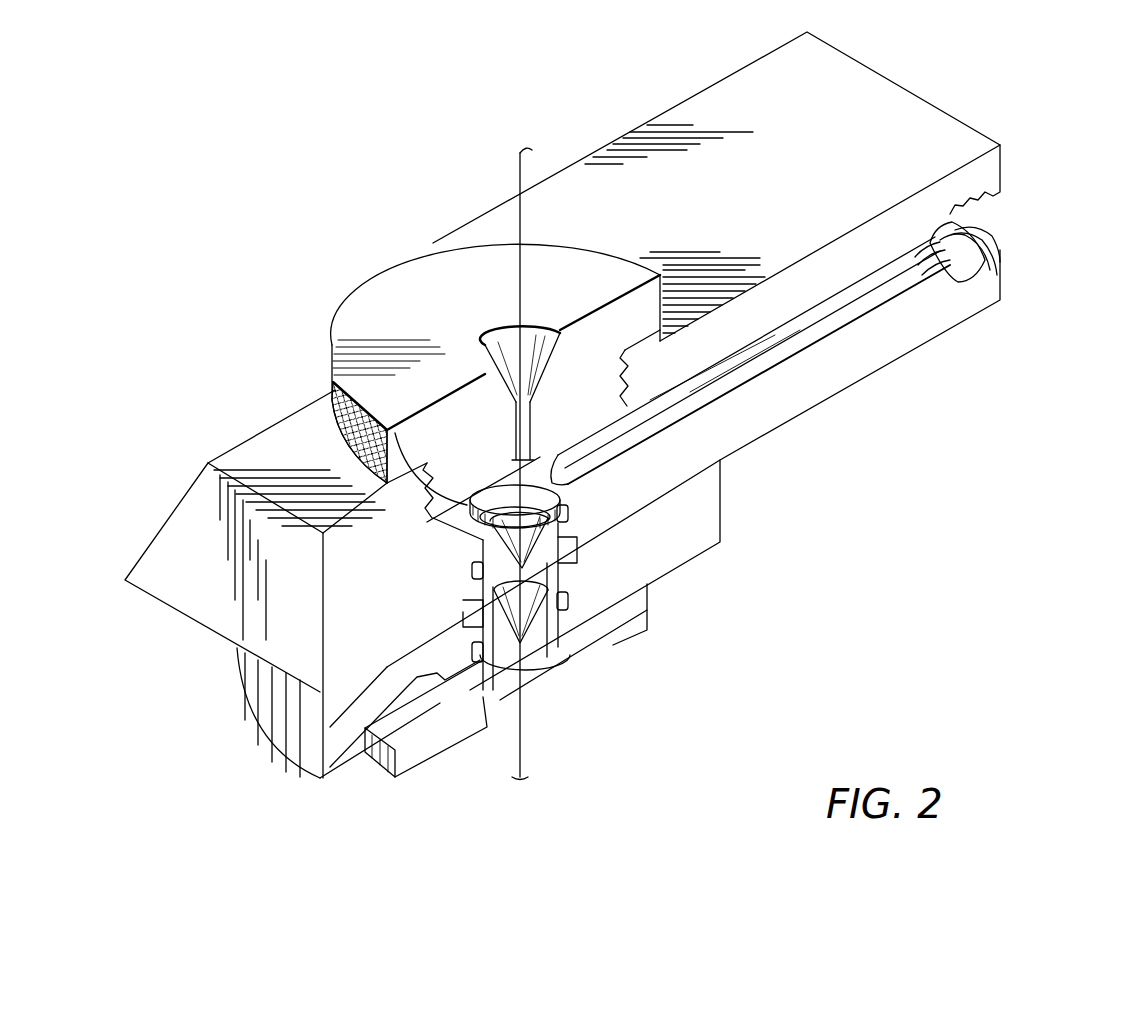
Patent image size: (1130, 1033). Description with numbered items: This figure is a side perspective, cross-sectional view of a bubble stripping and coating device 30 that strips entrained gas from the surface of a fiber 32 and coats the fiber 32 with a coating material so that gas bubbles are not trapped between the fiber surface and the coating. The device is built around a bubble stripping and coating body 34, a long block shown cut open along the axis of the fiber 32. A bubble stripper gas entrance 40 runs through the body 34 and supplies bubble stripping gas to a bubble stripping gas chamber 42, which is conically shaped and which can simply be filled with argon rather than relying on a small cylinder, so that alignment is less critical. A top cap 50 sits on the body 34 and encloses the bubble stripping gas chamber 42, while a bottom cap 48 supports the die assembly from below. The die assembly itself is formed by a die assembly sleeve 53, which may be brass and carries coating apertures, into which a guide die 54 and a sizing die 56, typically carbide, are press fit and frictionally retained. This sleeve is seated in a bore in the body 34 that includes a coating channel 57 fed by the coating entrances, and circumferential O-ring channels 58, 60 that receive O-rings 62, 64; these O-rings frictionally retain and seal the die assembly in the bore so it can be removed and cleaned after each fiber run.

The bubble stripping and coating device 30 is at (968, 108).
The fiber 32 is at (520, 186).
The bubble stripping and coating body 34 is at (802, 118).
The bubble stripper gas entrance 40 is at (870, 292).
The bubble stripping gas chamber 42 is at (345, 382).
The bottom cap 48 is at (445, 757).
The top cap 50 is at (367, 327).
The die assembly sleeve 53 is at (555, 572).
The guide die 54 is at (540, 535).
The sizing die 56 is at (540, 625).
The coating channel 57 is at (312, 760).
The circumferential O-ring channel 58 is at (470, 565).
The circumferential O-ring channel 60 is at (375, 748).
The O-ring 62 is at (490, 660).
The O-ring 64 is at (568, 513).